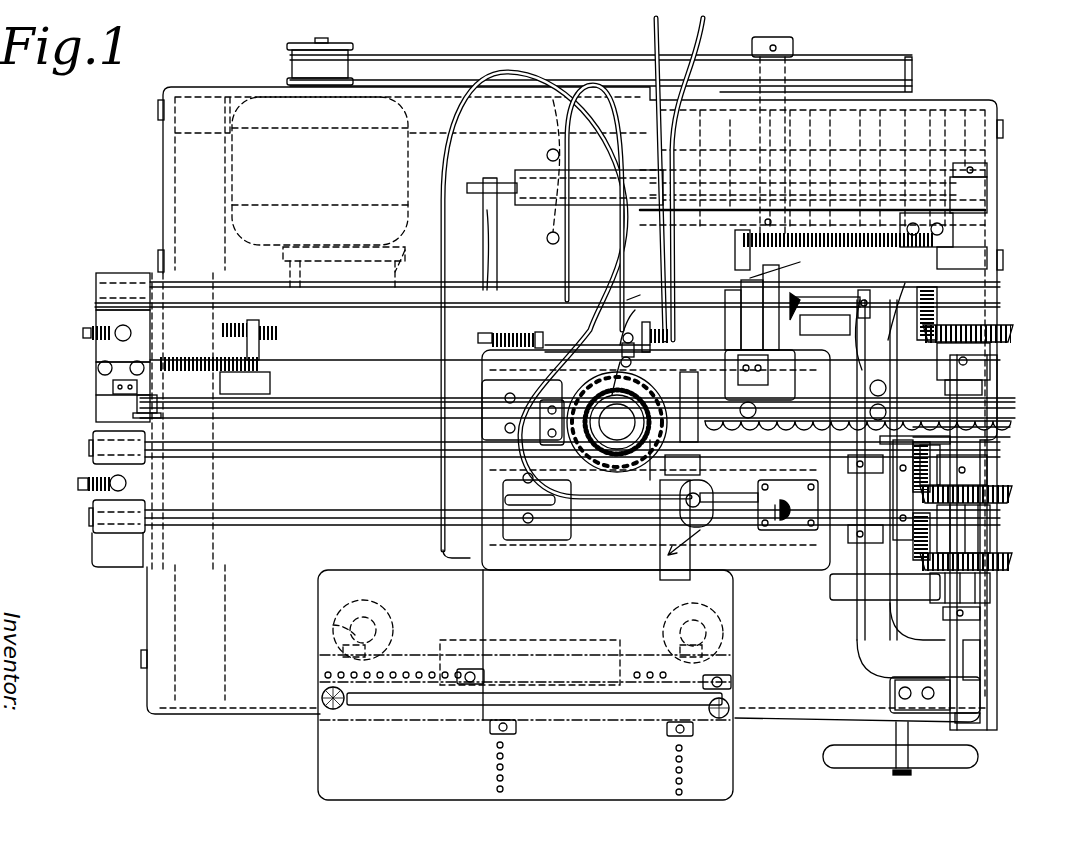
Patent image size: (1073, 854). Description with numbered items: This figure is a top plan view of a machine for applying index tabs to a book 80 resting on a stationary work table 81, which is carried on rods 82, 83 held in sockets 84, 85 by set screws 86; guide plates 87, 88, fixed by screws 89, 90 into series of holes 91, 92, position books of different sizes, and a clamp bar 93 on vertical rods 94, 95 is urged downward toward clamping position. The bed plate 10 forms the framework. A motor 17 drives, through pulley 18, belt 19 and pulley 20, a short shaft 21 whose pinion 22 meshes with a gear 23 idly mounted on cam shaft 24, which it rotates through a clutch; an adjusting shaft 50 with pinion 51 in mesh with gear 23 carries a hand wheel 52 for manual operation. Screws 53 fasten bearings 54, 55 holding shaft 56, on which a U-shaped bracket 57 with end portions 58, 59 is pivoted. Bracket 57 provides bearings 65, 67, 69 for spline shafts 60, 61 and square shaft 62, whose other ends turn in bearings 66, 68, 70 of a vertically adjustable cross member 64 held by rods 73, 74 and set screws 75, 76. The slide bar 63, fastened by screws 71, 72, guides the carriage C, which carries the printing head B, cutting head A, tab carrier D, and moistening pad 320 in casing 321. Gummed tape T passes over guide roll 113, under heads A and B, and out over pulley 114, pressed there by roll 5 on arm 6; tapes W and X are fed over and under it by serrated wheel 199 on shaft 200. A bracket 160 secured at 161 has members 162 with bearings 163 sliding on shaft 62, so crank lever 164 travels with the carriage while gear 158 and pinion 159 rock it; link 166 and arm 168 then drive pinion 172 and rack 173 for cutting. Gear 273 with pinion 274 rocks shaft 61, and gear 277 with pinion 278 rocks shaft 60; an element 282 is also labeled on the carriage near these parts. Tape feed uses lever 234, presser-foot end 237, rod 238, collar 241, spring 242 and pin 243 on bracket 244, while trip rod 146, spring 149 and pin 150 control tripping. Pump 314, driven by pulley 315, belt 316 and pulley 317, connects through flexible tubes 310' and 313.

The bed plate 10 is at (185, 185).
The motor 17 is at (300, 148).
The pulley 18 is at (335, 48).
The belt 19 is at (452, 60).
The pulley 20 is at (848, 60).
The short shaft 21 is at (790, 45).
The pinion 22 is at (765, 202).
The gear 23 is at (812, 232).
The cam shaft 24 is at (860, 168).
The shaft 50 is at (985, 596).
The pinion 51 is at (889, 308).
The hand wheel 52 is at (940, 763).
The screws 53 is at (935, 220).
The bearing 54 is at (975, 228).
The bearing 55 is at (965, 695).
The shaft 56 is at (985, 311).
The U-shaped bracket 57 is at (886, 472).
The end portion 58 is at (975, 262).
The end portion 59 is at (965, 660).
The spline shaft 60 is at (270, 533).
The spline shaft 61 is at (290, 463).
The square shaft 62 is at (398, 308).
The slide bar 63 is at (338, 375).
The cross member 64 is at (110, 415).
The bearing 65 is at (880, 546).
The bearing 66 is at (93, 530).
The bearing 67 is at (895, 517).
The bearing 68 is at (93, 446).
The bearing 69 is at (880, 280).
The bearing 70 is at (96, 296).
The screws 71 is at (868, 410).
The screws 72 is at (130, 368).
The rod 73 is at (112, 338).
The rod 74 is at (112, 480).
The set screw 75 is at (83, 331).
The set screw 76 is at (80, 486).
The book 80 is at (505, 619).
The work table 81 is at (525, 685).
The rod 82 is at (368, 616).
The rod 83 is at (680, 626).
The socket 84 is at (320, 615).
The socket 85 is at (680, 634).
The set screws 86 is at (332, 651).
The guide plates 87 is at (468, 668).
The guide plates 88 is at (512, 731).
The screws 89 is at (474, 675).
The screws 90 is at (498, 731).
The series of holes 91 is at (430, 670).
The series of holes 92 is at (503, 781).
The clamp bar 93 is at (425, 706).
The vertical rod 94 is at (340, 709).
The vertical rod 95 is at (719, 719).
The guide roll 113 is at (160, 416).
The pulley 114 is at (1012, 431).
The rod 146 is at (615, 323).
The spring 149 is at (492, 376).
The pin 150 is at (275, 356).
The gear 158 is at (990, 341).
The pinion 159 is at (990, 327).
The U-shaped bracket 160 is at (725, 286).
The securing point 161 is at (798, 361).
The projecting members 162 is at (740, 268).
The bearings 163 is at (733, 293).
The crank lever 164 is at (752, 241).
The link 166 is at (793, 262).
The arm 168 is at (830, 305).
The pinion 172 is at (753, 403).
The rack 173 is at (686, 423).
The serrated wheel 199 is at (660, 330).
The shaft 200 is at (617, 422).
The lever 234 is at (622, 336).
The end of presser foot 237 is at (630, 354).
The rod 238 is at (560, 344).
The collar 241 is at (480, 336).
The spring 242 is at (512, 333).
The adjustable pin 243 is at (272, 330).
The bracket 244 is at (247, 351).
The bevel gear 273 is at (1005, 498).
The pinion 274 is at (990, 474).
The gear 277 is at (1005, 563).
The pinion 278 is at (990, 531).
The lever 282 is at (698, 441).
The flexible tube 310' is at (540, 315).
The flexible tube 313 is at (630, 233).
The pump 314 is at (540, 172).
The pulley 315 is at (283, 267).
The belt 316 is at (384, 253).
The pulley 317 is at (483, 255).
The moistening pad 320 is at (749, 505).
The casing 321 is at (792, 516).
The roll 5 is at (916, 445).
The arm 6 is at (932, 465).
The cutting head A is at (735, 424).
The printing head B is at (600, 374).
The carriage C is at (492, 366).
The tab carrier D is at (713, 552).
The gummed tape T is at (312, 408).
The tape W is at (648, 30).
The tape X is at (705, 30).